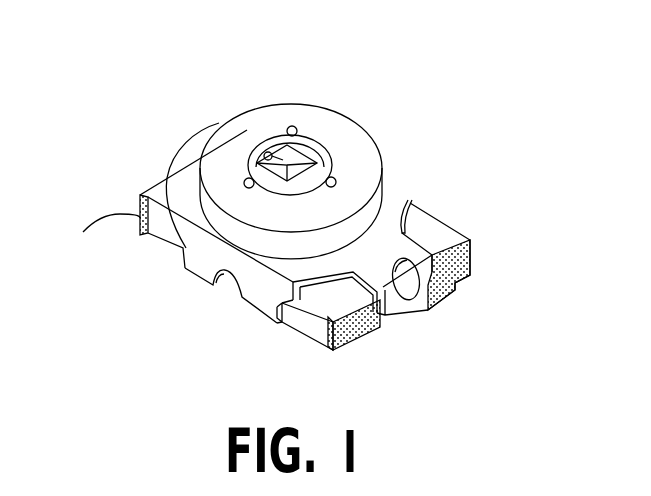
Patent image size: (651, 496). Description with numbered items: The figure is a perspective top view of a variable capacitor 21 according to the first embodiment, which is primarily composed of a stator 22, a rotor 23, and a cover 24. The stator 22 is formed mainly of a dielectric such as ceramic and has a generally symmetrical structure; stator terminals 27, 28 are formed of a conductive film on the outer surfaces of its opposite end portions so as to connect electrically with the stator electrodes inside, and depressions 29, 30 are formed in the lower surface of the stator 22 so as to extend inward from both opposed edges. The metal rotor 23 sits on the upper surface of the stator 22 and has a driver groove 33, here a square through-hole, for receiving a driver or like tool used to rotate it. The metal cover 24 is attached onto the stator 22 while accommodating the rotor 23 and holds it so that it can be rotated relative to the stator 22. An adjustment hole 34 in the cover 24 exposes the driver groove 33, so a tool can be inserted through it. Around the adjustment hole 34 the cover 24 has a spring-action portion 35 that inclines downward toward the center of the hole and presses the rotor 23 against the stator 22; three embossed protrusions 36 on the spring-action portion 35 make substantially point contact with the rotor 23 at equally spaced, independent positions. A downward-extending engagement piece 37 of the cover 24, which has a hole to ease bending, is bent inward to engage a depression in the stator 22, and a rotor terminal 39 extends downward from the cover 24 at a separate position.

The variable capacitor 21 is at (142, 40).
The stator 22 is at (134, 187).
The rotor 23 is at (335, 130).
The cover 24 is at (258, 99).
The stator terminal 27 is at (94, 216).
The stator terminal 28 is at (375, 340).
The depression 29 is at (345, 355).
The depression 30 is at (470, 287).
The driver groove 33 is at (350, 158).
The adjustment hole 34 is at (250, 148).
The spring-action portion 35 is at (277, 120).
The protrusion 36 is at (305, 125).
The engagement piece 37 is at (258, 302).
The rotor terminal 39 is at (413, 320).